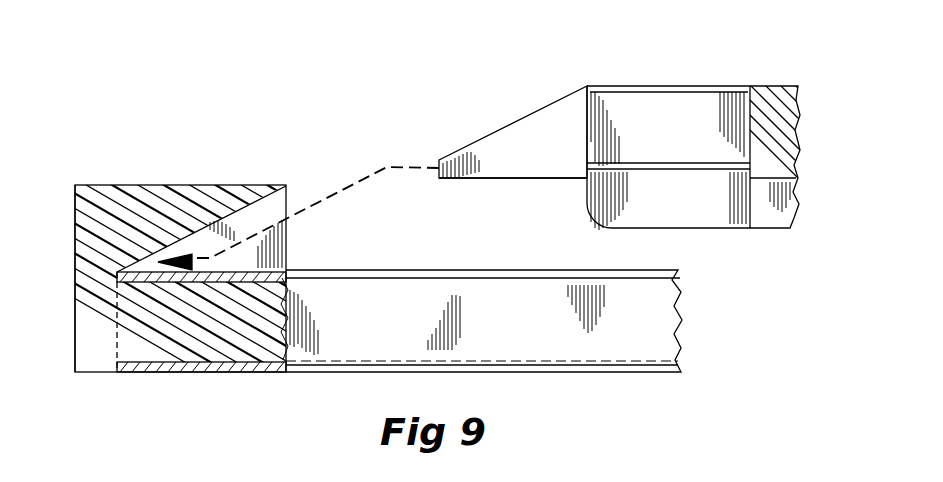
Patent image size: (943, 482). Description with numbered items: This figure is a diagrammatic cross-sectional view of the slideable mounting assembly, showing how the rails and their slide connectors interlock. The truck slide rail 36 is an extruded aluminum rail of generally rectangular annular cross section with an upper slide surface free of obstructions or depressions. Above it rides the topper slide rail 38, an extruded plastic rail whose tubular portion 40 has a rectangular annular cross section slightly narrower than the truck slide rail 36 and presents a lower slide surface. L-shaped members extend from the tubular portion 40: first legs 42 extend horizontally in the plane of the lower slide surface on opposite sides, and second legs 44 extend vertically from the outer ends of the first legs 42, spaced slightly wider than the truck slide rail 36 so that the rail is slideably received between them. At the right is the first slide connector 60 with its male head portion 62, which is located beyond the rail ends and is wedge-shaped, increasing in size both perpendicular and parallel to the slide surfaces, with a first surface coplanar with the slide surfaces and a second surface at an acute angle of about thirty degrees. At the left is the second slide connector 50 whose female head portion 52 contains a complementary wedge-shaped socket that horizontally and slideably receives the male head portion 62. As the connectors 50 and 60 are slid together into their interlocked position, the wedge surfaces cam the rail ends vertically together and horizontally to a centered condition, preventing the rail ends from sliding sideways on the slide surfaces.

The truck slide rail 36 is at (360, 366).
The topper slide rail 38 is at (759, 76).
The tubular portion 40 is at (648, 86).
The first leg 42 is at (684, 163).
The second leg 44 is at (734, 209).
The second slide connector 50 is at (83, 177).
The female head portion 52 is at (152, 185).
The first slide connector 60 is at (507, 123).
The male head portion 62 is at (516, 179).